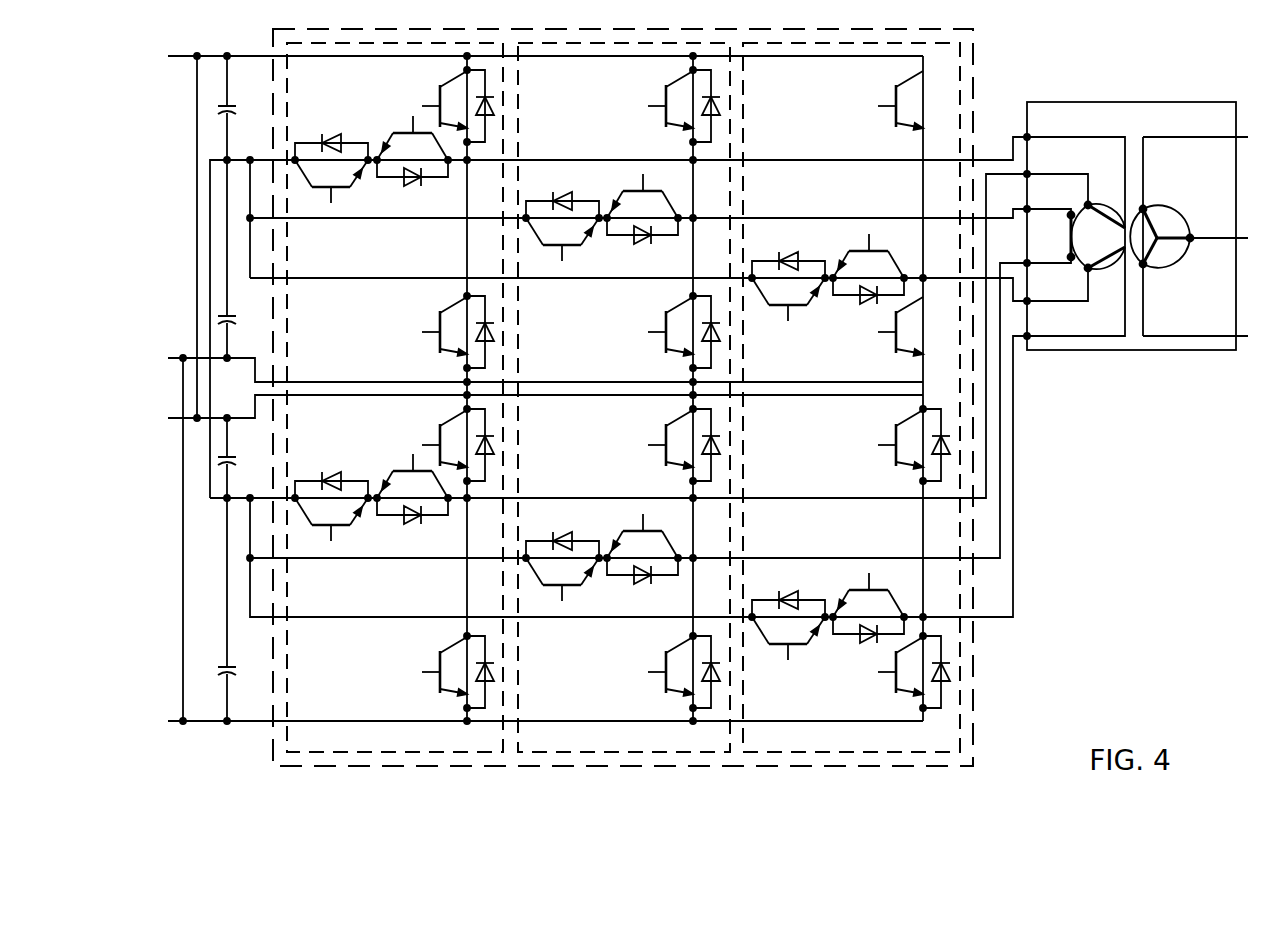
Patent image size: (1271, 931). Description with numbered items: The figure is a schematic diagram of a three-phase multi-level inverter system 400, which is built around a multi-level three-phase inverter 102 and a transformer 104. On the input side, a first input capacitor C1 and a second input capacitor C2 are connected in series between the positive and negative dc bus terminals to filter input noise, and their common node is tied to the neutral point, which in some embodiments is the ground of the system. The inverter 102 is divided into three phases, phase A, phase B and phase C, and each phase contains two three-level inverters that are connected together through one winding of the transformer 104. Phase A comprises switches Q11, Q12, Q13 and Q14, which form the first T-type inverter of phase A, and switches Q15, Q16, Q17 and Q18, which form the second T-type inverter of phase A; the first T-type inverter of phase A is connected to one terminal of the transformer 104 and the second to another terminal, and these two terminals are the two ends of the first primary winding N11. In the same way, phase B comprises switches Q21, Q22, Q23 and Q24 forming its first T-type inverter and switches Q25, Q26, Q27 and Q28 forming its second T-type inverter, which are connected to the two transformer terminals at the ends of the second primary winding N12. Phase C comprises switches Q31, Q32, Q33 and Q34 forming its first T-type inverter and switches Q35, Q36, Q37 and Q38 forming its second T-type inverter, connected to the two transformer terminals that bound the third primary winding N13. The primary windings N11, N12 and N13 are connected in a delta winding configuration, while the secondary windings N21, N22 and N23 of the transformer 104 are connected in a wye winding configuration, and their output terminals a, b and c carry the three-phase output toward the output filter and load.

The three-phase multi-level inverter system 400 is at (1195, 65).
The multi-level three-phase inverter 102 is at (980, 72).
The transformer 104 is at (1137, 254).
The first input capacitor C1 is at (240, 285).
The second input capacitor C2 is at (240, 496).
The switch Q11 is at (449, 106).
The switch Q12 is at (449, 332).
The switch Q13 is at (331, 172).
The switch Q14 is at (412, 149).
The switch Q15 is at (449, 445).
The switch Q16 is at (449, 672).
The switch Q17 is at (331, 510).
The switch Q18 is at (412, 487).
The switch Q21 is at (675, 106).
The switch Q22 is at (675, 332).
The switch Q23 is at (562, 230).
The switch Q24 is at (642, 208).
The switch Q25 is at (675, 445).
The switch Q26 is at (675, 672).
The switch Q27 is at (562, 570).
The switch Q28 is at (642, 548).
The switch Q31 is at (891, 100).
The switch Q32 is at (891, 327).
The switch Q33 is at (788, 291).
The switch Q34 is at (868, 268).
The switch Q35 is at (905, 445).
The switch Q36 is at (905, 672).
The switch Q37 is at (788, 629).
The switch Q38 is at (868, 606).
The first primary winding N11 is at (1105, 198).
The second primary winding N12 is at (1088, 236).
The third primary winding N13 is at (1105, 276).
The secondary winding N21 is at (1165, 212).
The secondary winding N22 is at (1160, 250).
The secondary winding N23 is at (1191, 249).